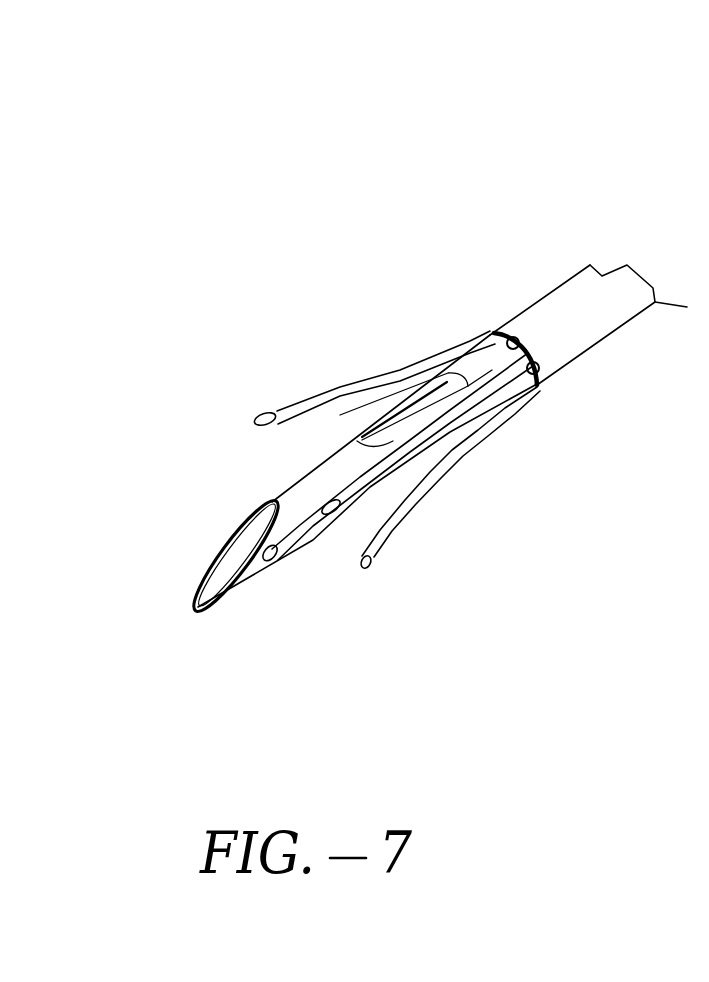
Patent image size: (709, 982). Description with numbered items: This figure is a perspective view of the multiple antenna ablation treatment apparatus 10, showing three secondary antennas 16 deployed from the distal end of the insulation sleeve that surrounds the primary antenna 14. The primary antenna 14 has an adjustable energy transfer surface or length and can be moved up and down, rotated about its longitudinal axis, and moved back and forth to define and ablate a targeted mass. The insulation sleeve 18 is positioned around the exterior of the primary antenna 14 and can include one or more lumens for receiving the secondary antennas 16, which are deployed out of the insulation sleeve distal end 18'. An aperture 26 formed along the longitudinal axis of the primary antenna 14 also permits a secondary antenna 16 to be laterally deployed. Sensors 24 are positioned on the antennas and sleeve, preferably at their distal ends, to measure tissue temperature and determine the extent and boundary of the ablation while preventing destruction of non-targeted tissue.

The ablation treatment apparatus 10 is at (480, 208).
The primary antenna 14 is at (307, 527).
The secondary antennas 16 is at (373, 390).
The insulation sleeve 18 is at (588, 316).
The insulation sleeve distal end 18' is at (606, 361).
The sensors 24 is at (515, 333).
The aperture 26 is at (393, 423).